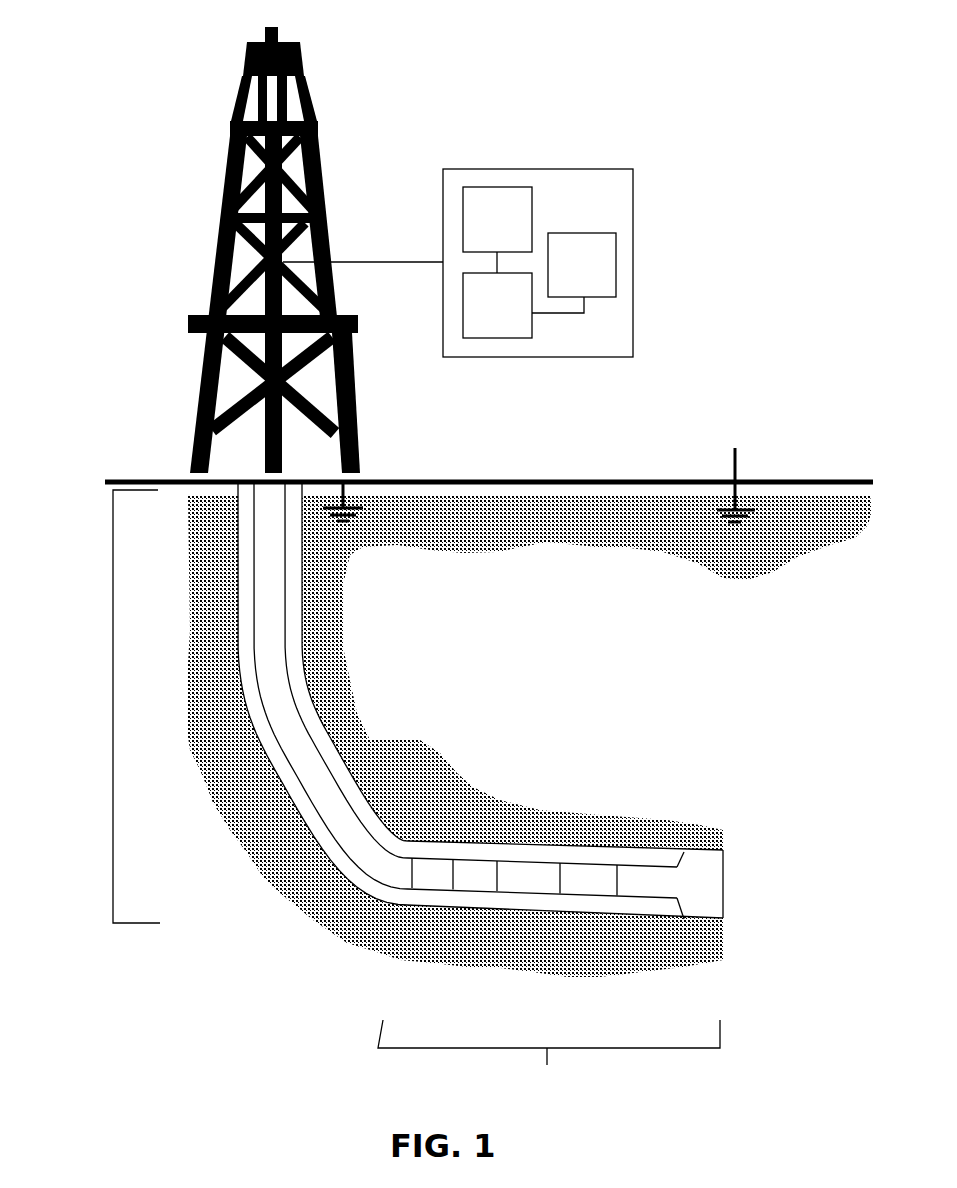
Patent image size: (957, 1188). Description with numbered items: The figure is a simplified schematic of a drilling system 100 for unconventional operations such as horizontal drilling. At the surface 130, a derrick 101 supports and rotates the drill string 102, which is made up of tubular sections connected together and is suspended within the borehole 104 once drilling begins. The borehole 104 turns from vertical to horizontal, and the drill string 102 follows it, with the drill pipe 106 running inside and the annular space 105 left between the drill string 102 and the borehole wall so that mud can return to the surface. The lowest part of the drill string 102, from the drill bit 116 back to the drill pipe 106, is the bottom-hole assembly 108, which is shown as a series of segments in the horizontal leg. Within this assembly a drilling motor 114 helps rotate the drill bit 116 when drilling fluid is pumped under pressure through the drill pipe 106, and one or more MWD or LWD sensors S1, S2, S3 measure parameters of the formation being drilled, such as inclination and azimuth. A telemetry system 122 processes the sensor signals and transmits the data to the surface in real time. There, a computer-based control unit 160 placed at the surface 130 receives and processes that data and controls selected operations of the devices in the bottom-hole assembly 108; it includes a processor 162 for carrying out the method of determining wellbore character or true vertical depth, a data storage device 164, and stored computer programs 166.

The drilling system 100 is at (583, 96).
The derrick 101 is at (303, 55).
The drill string 102 is at (113, 713).
The borehole 104 is at (238, 578).
The annular space 105 is at (282, 792).
The drill pipe 106 is at (270, 700).
The bottom-hole assembly 108 is at (549, 1061).
The drilling motor 114 is at (670, 909).
The drill bit 116 is at (715, 890).
The telemetry system 122 is at (433, 883).
The surface 130 is at (120, 477).
The control unit 160 is at (458, 246).
The processor 162 is at (497, 219).
The data storage device 164 is at (497, 305).
The computer programs 166 is at (582, 265).
The MWD/LWD sensor S1 is at (485, 904).
The MWD/LWD sensor S2 is at (542, 920).
The MWD/LWD sensor S3 is at (614, 931).